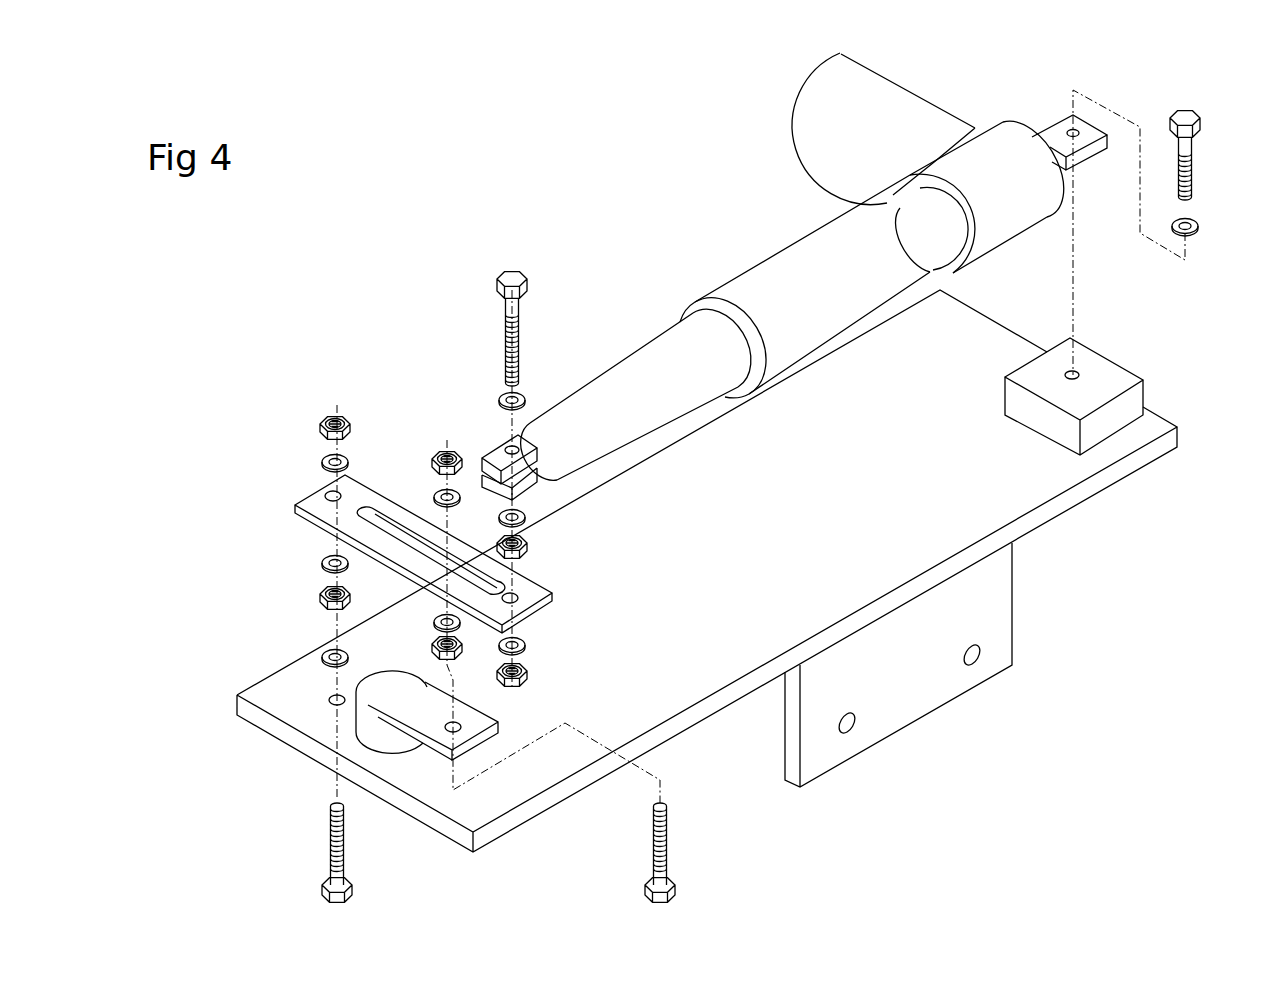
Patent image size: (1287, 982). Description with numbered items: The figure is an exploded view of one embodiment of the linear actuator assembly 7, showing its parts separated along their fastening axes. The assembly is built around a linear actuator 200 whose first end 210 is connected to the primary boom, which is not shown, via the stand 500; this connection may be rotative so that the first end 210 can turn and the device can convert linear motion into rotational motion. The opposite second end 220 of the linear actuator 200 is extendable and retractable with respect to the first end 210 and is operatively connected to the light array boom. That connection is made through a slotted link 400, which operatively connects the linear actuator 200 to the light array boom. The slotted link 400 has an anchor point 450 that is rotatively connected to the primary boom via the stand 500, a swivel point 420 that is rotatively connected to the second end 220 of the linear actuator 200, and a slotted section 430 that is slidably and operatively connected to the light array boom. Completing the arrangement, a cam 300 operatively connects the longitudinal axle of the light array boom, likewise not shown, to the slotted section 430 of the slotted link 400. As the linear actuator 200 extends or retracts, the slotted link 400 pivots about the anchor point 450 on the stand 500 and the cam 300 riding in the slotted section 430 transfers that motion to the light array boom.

The linear actuator assembly 7 is at (190, 312).
The linear actuator 200 is at (792, 275).
The first end 210 is at (1062, 130).
The second end 220 is at (490, 450).
The cam 300 is at (383, 698).
The slotted link 400 is at (498, 596).
The swivel point 420 is at (540, 610).
The slotted section 430 is at (360, 513).
The anchor point 450 is at (333, 495).
The stand 500 is at (943, 530).